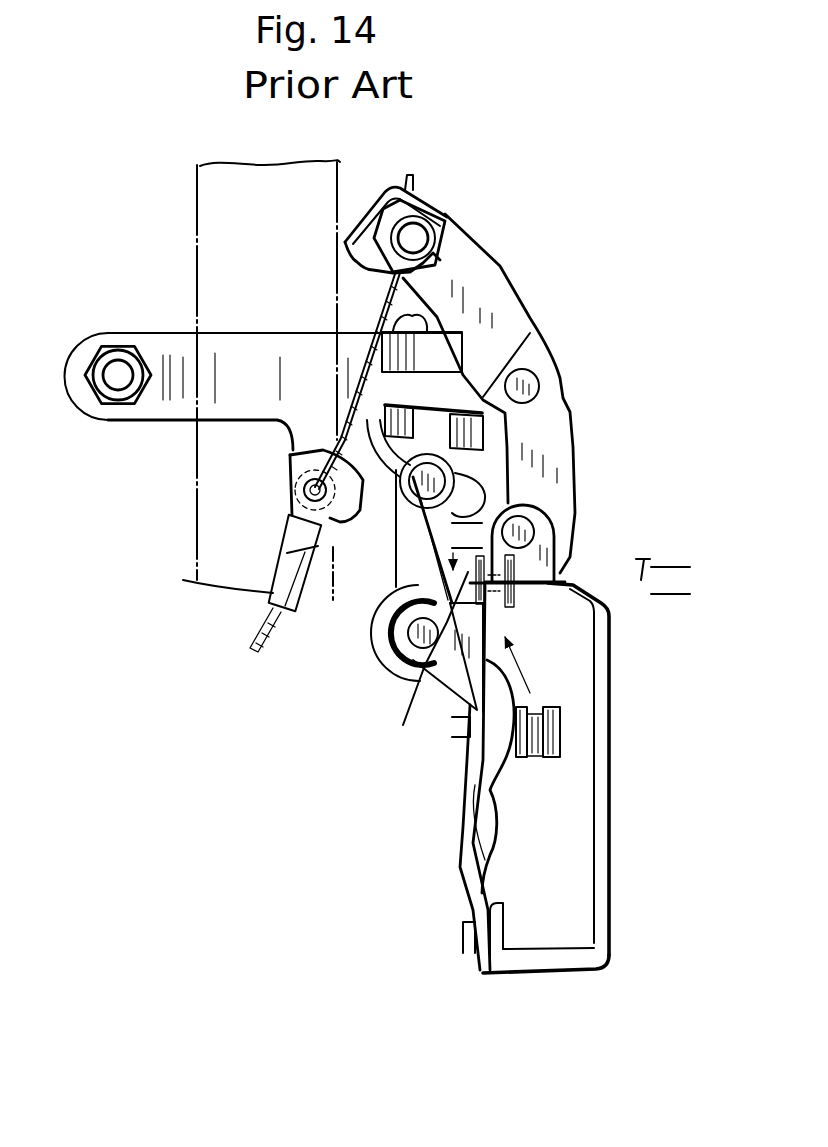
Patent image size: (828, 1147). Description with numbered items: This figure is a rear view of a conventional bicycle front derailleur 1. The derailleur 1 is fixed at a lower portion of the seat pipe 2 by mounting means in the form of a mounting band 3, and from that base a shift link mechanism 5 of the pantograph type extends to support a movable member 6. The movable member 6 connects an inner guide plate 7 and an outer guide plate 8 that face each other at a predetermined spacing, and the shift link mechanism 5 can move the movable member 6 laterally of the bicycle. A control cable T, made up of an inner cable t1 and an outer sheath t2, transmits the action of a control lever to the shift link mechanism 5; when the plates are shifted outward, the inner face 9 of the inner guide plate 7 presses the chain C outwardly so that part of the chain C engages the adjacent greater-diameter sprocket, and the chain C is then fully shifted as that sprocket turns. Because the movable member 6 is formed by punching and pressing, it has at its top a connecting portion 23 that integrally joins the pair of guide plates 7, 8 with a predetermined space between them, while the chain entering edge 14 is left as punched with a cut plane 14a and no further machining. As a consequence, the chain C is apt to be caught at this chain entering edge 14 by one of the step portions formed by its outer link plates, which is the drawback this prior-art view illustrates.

The rear derailleur 1 is at (479, 574).
The seat pipe 2 is at (197, 215).
The mounting band 3 is at (125, 425).
The shift link mechanism 5 is at (583, 442).
The movable member 6 is at (610, 762).
The inner guide plate 7 is at (458, 770).
The outer guide plate 8 is at (610, 707).
The inner face 9 is at (585, 645).
The chain entering edge 14 is at (579, 567).
The cut plane 14a is at (575, 578).
The connecting portion 23 is at (548, 590).
The chain C is at (537, 760).
The inner cable t1 is at (263, 638).
The outer sheath t2 is at (305, 607).
The control cable T is at (335, 731).